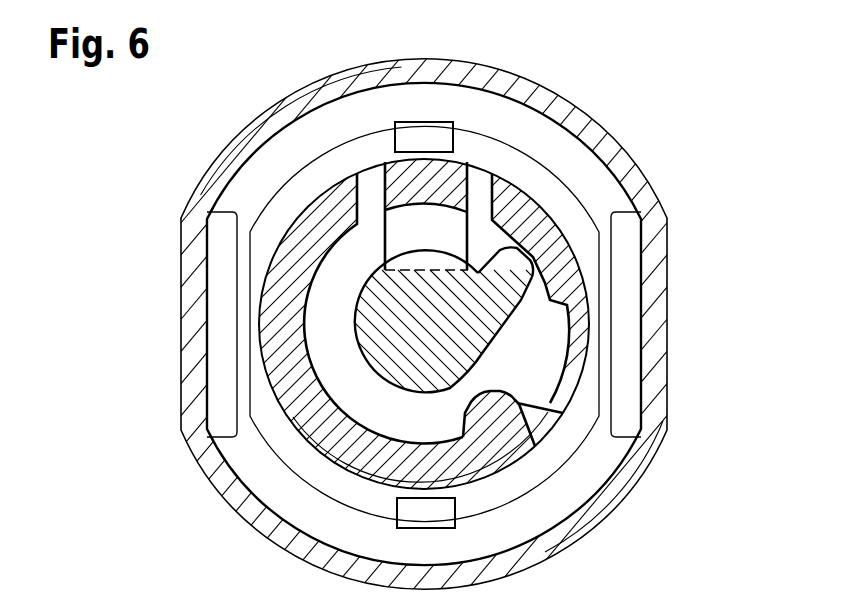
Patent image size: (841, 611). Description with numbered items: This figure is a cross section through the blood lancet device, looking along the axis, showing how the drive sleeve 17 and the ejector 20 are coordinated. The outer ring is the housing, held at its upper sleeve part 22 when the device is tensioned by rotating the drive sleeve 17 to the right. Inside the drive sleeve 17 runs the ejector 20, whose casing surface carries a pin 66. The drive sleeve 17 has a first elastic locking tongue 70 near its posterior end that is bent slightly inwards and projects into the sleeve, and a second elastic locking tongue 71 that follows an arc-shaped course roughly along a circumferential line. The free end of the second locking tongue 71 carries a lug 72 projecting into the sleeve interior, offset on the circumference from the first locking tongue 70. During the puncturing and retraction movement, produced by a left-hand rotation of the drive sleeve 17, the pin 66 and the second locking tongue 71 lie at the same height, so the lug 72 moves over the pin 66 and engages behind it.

The drive sleeve 17 is at (533, 207).
The ejector 20 is at (405, 364).
The upper sleeve part 22 is at (190, 249).
The pin 66 is at (510, 268).
The first elastic locking tongue 70 is at (447, 230).
The second elastic locking tongue 71 is at (460, 462).
The lug 72 is at (519, 404).